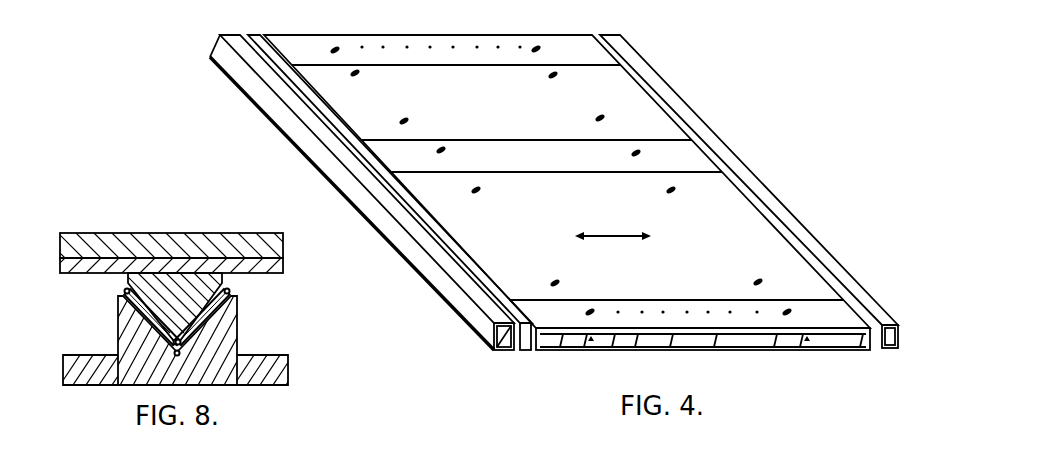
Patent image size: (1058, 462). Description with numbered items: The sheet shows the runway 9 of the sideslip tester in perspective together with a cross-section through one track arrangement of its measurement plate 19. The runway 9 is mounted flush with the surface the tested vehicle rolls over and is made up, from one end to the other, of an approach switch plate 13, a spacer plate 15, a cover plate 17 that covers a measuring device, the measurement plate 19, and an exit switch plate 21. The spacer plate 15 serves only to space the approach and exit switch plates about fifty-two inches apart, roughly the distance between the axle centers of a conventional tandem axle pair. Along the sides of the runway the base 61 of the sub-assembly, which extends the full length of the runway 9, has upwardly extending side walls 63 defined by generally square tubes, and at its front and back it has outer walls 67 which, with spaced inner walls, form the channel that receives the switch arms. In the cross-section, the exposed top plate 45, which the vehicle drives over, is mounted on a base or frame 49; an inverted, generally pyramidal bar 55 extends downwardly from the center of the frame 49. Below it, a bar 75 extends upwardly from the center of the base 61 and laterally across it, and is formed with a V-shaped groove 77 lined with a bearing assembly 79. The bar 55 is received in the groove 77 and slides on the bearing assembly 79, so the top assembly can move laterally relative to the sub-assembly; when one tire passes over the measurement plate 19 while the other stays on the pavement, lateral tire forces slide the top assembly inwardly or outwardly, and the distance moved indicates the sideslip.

In FIG. 4, the runway 9 is at (694, 99).
In FIG. 4, the approach switch plate 13 is at (290, 50).
In FIG. 4, the spacer plate 15 is at (310, 77).
In FIG. 4, the cover plate 17 is at (377, 147).
In FIG. 4, the measurement plate 19 is at (476, 257).
In FIG. 4, the exit switch plate 21 is at (547, 315).
In FIG. 4, the side walls 63 is at (773, 190).
In FIG. 4, the outer walls 67 is at (638, 338).
In FIG. 8, the top plate 45 is at (284, 245).
In FIG. 8, the base or frame 49 is at (283, 266).
In FIG. 8, the inverted pyramidal bar 55 is at (224, 279).
In FIG. 8, the base 61 is at (273, 355).
In FIG. 8, the bar 75 is at (238, 326).
In FIG. 8, the V-shaped groove 77 is at (118, 326).
In FIG. 8, the bearing assembly 79 is at (124, 303).